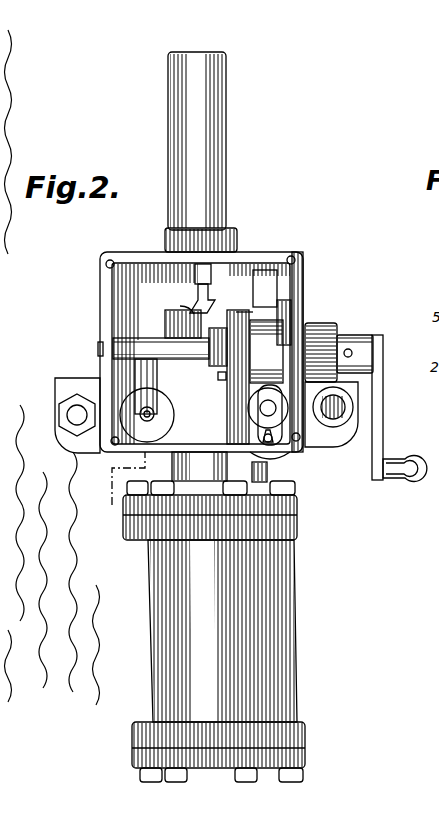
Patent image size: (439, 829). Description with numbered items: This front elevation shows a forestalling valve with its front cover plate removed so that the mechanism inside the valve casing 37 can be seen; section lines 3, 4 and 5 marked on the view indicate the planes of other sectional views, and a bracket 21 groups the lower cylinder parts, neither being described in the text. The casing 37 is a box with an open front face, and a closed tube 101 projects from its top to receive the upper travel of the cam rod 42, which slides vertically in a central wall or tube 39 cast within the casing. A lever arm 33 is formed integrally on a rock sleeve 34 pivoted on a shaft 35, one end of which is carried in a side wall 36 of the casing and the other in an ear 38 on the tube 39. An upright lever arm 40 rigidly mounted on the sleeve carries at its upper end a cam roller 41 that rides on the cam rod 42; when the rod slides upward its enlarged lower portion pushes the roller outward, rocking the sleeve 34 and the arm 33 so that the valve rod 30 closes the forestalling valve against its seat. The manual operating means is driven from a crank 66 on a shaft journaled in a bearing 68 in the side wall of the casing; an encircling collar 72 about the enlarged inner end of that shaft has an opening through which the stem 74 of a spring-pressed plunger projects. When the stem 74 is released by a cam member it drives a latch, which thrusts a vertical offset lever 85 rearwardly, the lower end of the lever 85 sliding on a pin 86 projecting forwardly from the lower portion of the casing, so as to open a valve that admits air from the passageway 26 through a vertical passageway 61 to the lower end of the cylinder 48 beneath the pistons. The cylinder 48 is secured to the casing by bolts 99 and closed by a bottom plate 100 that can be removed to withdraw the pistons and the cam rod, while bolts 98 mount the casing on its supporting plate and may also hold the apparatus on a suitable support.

The section line 3- 3 is at (147, 113).
The section line 4- 4 is at (203, 43).
The section line 5- 5 is at (262, 200).
The closed tube 101 is at (222, 140).
The side wall 36 is at (100, 310).
The shaft 35 is at (100, 350).
The valve casing 37 is at (304, 287).
The cam roller 41 is at (211, 270).
The upright lever arm 40 is at (207, 303).
The cam rod 42 is at (190, 310).
The rock sleeve 34 is at (163, 344).
The lever arm 33 is at (110, 382).
The valve rod 30 is at (154, 411).
The ear 38 is at (215, 366).
The central wall or tube 39 is at (218, 377).
The stem 74 is at (219, 381).
The encircling collar 72 is at (263, 326).
The vertical offset lever 85 is at (259, 406).
The pin 86 is at (273, 447).
The bearing 68 is at (336, 324).
The crank 66 is at (371, 334).
The bolts 98 is at (335, 440).
The bolts 99 is at (295, 486).
The cylinder assembly 21 is at (132, 563).
The cylinder 48 is at (210, 551).
The vertical passageway 61 is at (298, 628).
The bottom plate 100 is at (303, 768).
The passageway 26 is at (438, 403).